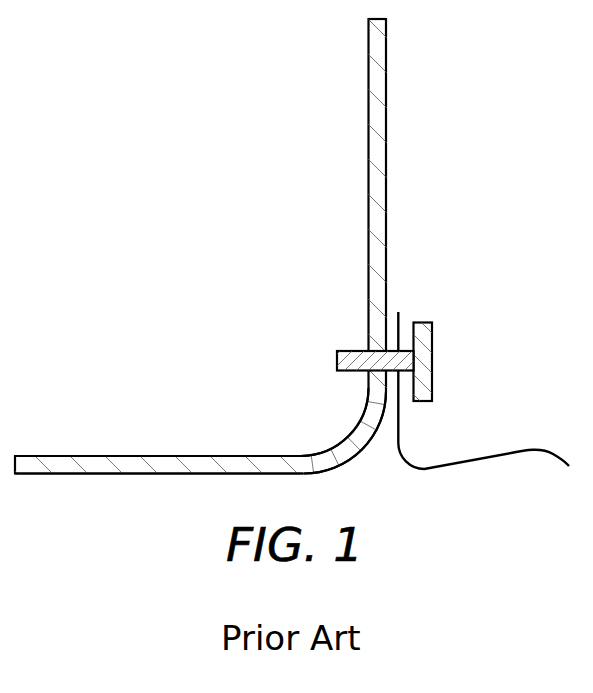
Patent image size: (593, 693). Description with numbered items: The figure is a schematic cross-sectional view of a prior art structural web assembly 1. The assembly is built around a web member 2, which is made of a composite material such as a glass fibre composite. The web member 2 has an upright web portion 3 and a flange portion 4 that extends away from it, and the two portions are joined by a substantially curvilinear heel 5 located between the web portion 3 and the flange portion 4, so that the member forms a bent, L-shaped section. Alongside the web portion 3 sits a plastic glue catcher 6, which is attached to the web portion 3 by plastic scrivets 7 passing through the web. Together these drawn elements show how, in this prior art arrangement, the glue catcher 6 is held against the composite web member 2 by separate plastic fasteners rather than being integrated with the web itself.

The structural web assembly 1 is at (106, 134).
The web member 2 is at (376, 36).
The web portion 3 is at (364, 129).
The flange portion 4 is at (58, 459).
The heel 5 is at (356, 436).
The glue catcher 6 is at (513, 447).
The scrivets 7 is at (429, 332).